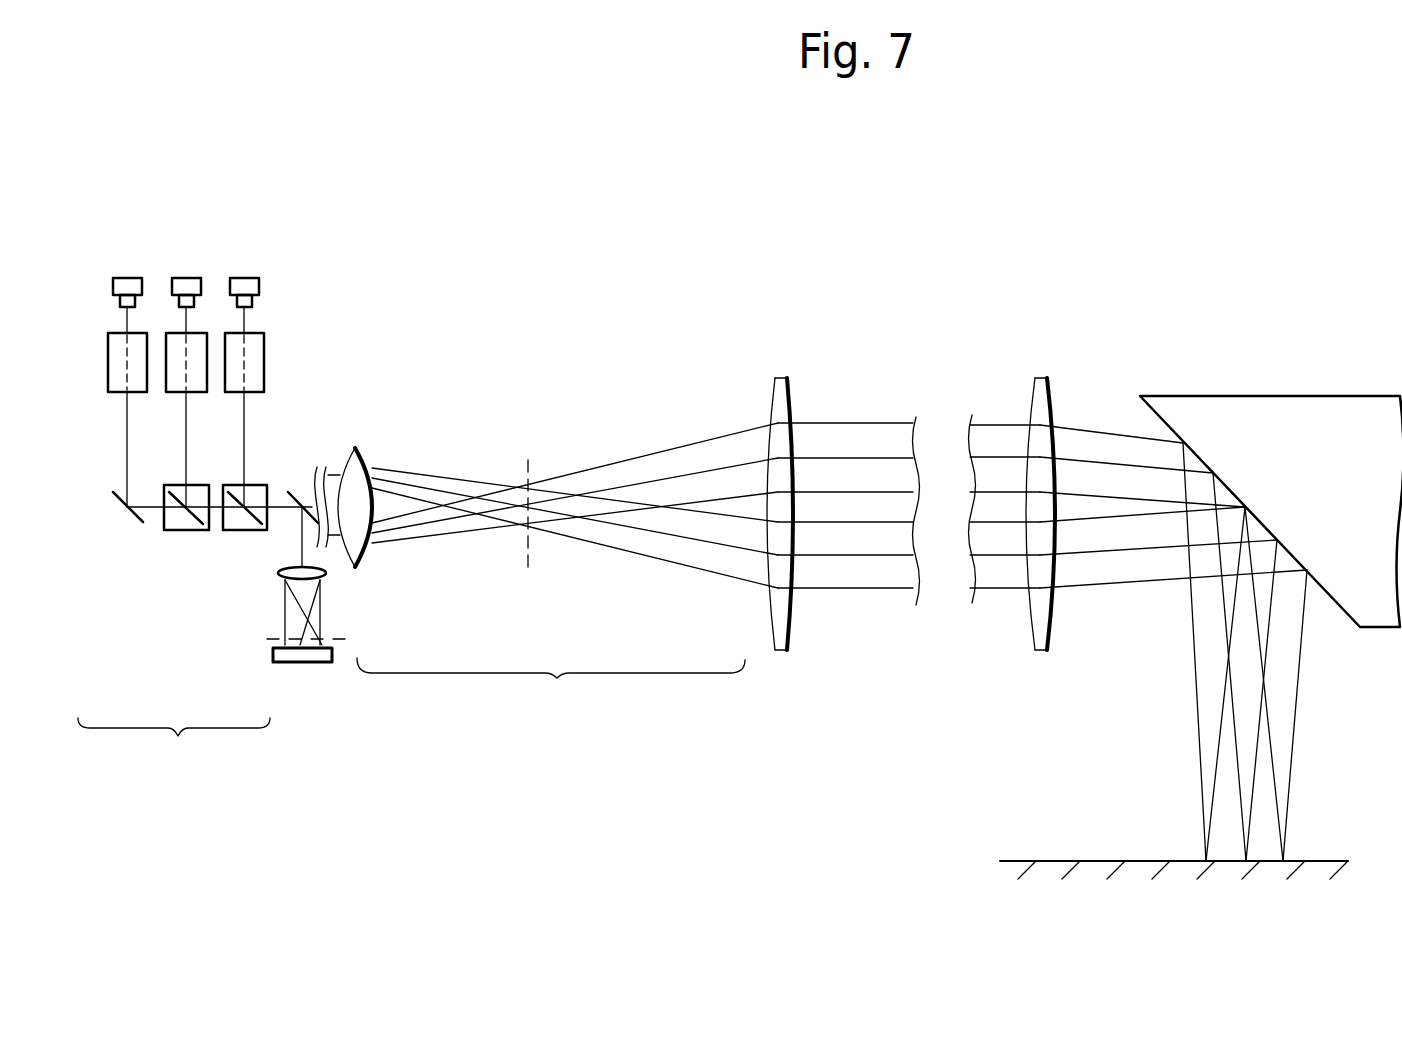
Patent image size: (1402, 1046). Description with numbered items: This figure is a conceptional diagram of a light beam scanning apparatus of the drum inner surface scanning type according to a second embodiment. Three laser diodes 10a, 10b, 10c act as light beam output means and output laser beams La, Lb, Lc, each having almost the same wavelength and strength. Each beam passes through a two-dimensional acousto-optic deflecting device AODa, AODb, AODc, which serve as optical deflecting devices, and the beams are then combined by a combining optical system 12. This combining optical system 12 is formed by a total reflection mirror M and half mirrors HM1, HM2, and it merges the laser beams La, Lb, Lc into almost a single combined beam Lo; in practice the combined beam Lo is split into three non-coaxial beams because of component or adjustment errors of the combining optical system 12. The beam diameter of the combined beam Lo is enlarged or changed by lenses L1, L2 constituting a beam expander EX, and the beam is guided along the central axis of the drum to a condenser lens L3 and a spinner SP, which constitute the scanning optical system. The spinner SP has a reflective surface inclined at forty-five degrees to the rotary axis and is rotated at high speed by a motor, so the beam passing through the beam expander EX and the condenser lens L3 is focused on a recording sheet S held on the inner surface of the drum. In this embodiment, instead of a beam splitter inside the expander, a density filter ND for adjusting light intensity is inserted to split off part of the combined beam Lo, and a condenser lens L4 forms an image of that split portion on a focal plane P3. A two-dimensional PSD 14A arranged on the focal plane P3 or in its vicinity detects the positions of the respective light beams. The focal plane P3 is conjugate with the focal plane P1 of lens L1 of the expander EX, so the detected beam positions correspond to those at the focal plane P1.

The laser diode 10a is at (130, 277).
The laser diode 10b is at (190, 277).
The laser diode 10c is at (250, 277).
The two-dimensional acousto-optic deflecting device AODa is at (147, 346).
The two-dimensional acousto-optic deflecting device AODb is at (207, 350).
The two-dimensional acousto-optic deflecting device AODc is at (264, 348).
The laser beam La is at (127, 452).
The laser beam Lb is at (186, 452).
The laser beam Lc is at (244, 452).
The combined beam Lo is at (280, 505).
The total reflection mirror M is at (137, 522).
The half mirror HM1 is at (186, 530).
The half mirror HM2 is at (243, 530).
The combining optical system 12 is at (174, 630).
The density filter ND is at (292, 490).
The lens L1 is at (366, 570).
The lens L2 is at (766, 625).
The condenser lens L3 is at (1050, 400).
The condenser lens L4 is at (278, 567).
The focal plane P1 is at (537, 463).
The focal plane P3 is at (267, 640).
The two-dimensional PSD 14A is at (318, 662).
The beam expander EX is at (567, 571).
The spinner SP is at (1322, 396).
The recording sheet S is at (1043, 861).